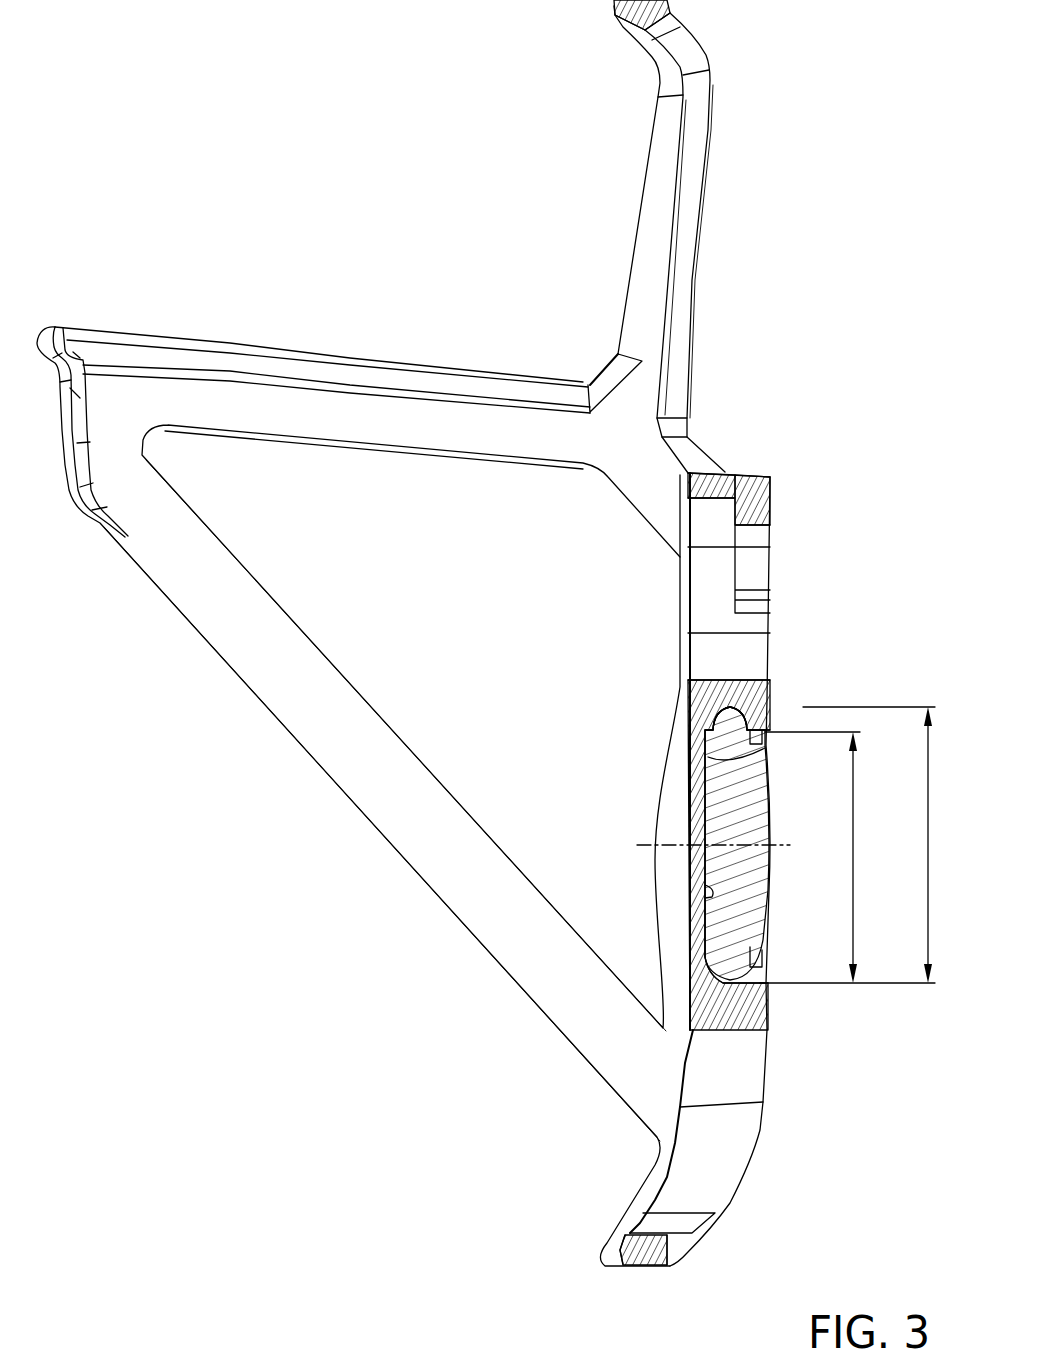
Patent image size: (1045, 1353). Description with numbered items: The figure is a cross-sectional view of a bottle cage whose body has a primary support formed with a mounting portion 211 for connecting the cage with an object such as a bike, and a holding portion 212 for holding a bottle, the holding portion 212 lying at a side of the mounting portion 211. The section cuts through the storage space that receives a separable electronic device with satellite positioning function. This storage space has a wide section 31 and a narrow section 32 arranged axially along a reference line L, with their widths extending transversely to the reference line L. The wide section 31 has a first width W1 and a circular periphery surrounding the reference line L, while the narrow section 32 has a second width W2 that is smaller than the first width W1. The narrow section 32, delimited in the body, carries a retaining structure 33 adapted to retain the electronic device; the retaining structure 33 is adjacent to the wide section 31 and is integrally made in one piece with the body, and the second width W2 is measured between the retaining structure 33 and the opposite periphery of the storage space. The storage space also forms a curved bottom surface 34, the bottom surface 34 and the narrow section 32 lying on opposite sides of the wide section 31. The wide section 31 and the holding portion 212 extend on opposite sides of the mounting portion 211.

The holding portion 212 is at (438, 488).
The mounting portion 211 is at (708, 702).
The wide section 31 is at (712, 733).
The narrow section 32 is at (757, 754).
The retaining structure 33 is at (760, 727).
The bottom surface 34 is at (708, 888).
The reference line L is at (634, 836).
The first width W1 is at (847, 845).
The second width W2 is at (812, 857).